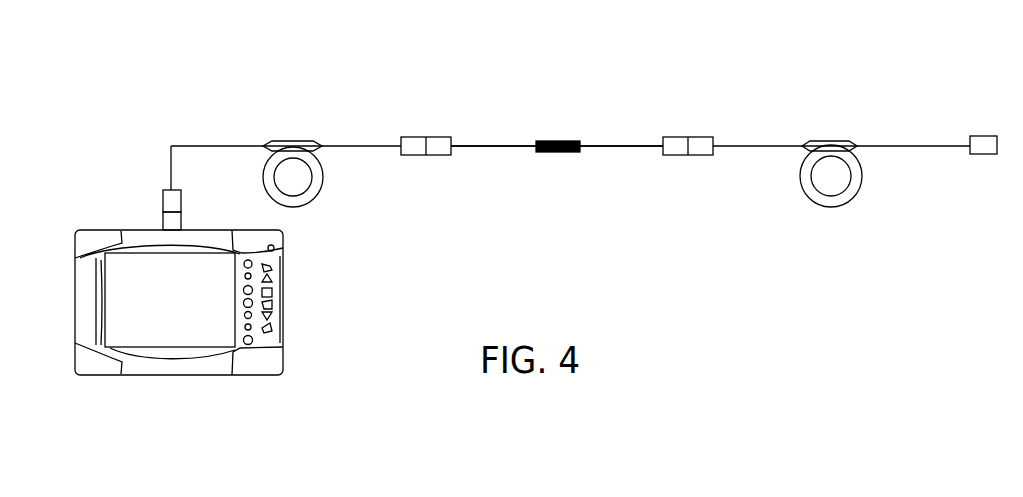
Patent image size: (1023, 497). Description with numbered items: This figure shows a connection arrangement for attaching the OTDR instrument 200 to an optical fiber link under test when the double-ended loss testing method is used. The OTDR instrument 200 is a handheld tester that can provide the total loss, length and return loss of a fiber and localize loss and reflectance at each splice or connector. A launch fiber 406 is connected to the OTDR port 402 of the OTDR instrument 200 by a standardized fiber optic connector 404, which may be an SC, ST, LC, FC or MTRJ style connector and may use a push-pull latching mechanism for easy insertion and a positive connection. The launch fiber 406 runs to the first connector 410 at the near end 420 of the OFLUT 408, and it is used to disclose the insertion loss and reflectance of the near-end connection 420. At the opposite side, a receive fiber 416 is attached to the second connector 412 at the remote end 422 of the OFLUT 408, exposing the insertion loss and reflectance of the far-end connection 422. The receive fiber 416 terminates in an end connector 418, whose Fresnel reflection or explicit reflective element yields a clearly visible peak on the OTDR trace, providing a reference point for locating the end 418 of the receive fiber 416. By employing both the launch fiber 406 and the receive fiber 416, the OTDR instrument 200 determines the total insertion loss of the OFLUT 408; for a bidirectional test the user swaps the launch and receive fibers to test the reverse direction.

The OTDR instrument 200 is at (172, 378).
The OTDR port 402 is at (167, 223).
The fiber optic connector 404 is at (163, 195).
The launch fiber 406 is at (293, 146).
The optical fiber link under test 408 is at (452, 119).
The first connector 410 is at (420, 137).
The second connector 412 is at (693, 136).
The receive fiber 416 is at (838, 140).
The end connector 418 is at (983, 154).
The near end 420 is at (458, 148).
The remote end 422 is at (653, 148).